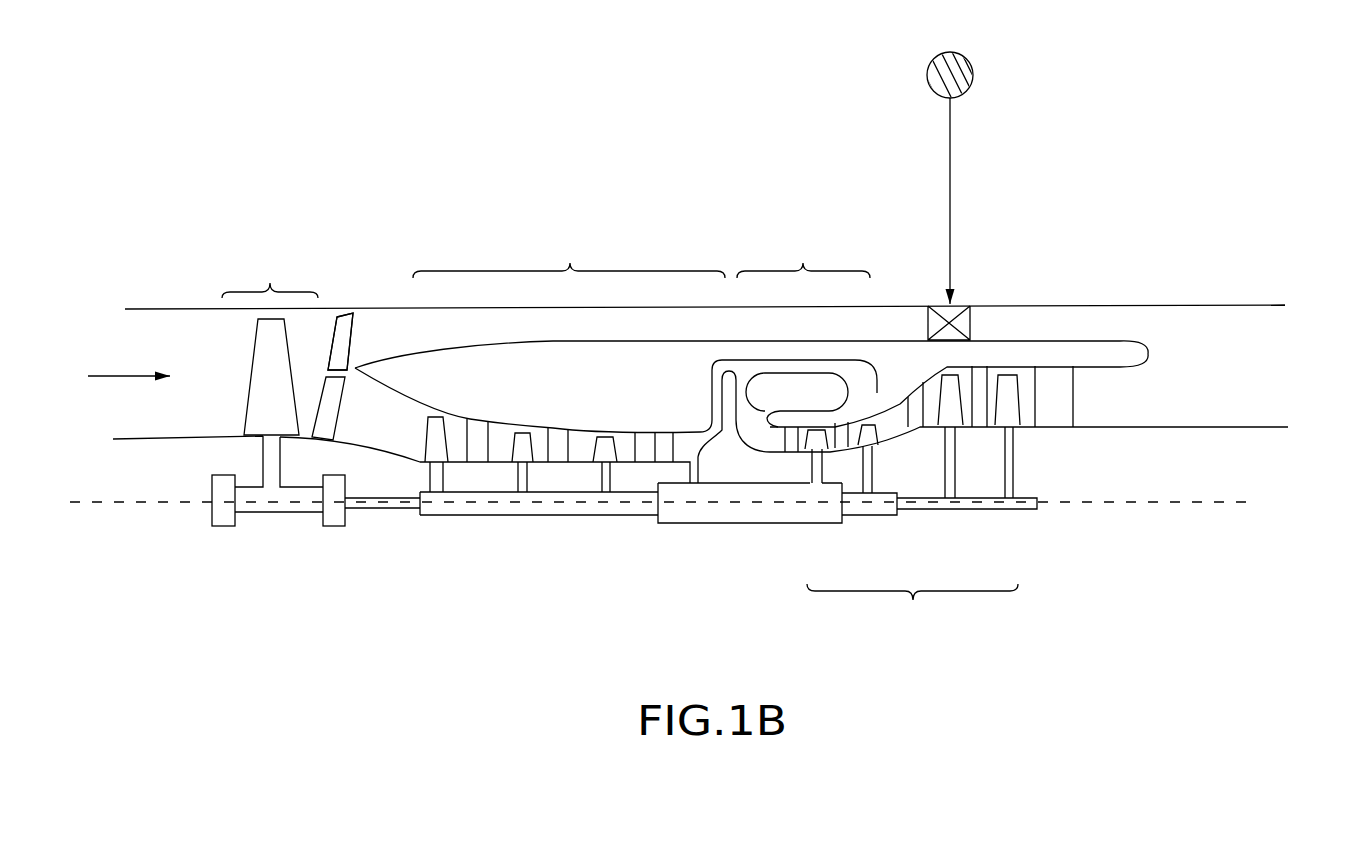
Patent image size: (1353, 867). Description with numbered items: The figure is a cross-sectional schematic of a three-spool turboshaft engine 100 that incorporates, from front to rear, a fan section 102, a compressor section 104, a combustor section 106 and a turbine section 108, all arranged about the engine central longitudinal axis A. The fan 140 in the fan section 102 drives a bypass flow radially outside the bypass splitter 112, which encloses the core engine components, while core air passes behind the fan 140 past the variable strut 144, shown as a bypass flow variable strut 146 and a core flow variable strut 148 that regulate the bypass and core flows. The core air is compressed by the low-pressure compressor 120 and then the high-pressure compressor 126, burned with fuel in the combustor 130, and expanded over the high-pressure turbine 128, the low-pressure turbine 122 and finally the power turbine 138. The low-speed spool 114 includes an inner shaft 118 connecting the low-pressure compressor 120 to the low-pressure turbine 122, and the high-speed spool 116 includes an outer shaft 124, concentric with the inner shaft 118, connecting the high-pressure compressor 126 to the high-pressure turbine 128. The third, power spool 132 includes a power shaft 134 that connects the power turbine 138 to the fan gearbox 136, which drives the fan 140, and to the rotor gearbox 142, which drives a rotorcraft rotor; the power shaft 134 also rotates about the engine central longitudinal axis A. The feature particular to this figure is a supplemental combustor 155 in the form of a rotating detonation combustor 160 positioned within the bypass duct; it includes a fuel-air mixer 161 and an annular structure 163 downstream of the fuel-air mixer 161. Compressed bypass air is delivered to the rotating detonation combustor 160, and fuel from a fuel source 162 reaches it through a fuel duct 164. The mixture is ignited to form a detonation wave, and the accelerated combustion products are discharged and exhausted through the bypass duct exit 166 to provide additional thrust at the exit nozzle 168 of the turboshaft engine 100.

The turboshaft engine 100 is at (153, 178).
The fan section 102 is at (270, 277).
The compressor section 104 is at (569, 258).
The combustor section 106 is at (794, 329).
The turbine section 108 is at (912, 610).
The bypass splitter 112 is at (563, 396).
The low-speed spool 114 is at (457, 503).
The high-speed spool 116 is at (747, 512).
The inner shaft 118 is at (500, 503).
The low-pressure compressor 120 is at (548, 475).
The low-pressure turbine 122 is at (885, 454).
The outer shaft 124 is at (792, 500).
The high-pressure compressor 126 is at (712, 460).
The high-pressure turbine 128 is at (832, 459).
The combustor 130 is at (786, 404).
The power spool 132 is at (991, 510).
The power shaft 134 is at (379, 503).
The fan gearbox 136 is at (333, 510).
The power turbine 138 is at (1025, 442).
The fan 140 is at (263, 403).
The rotor gearbox 142 is at (220, 510).
The variable strut 144 is at (345, 330).
The bypass flow variable strut 146 is at (343, 345).
The core flow variable strut 148 is at (333, 400).
The supplemental combustor 155 is at (908, 238).
The rotating detonation combustor 160 is at (977, 283).
The fuel-air mixer 161 is at (926, 324).
The fuel source 162 is at (968, 60).
The annular structure 163 is at (972, 324).
The fuel duct 164 is at (951, 143).
The bypass duct exit 166 is at (1143, 333).
The exit nozzle 168 is at (1295, 352).
The engine central longitudinal axis A is at (1173, 504).